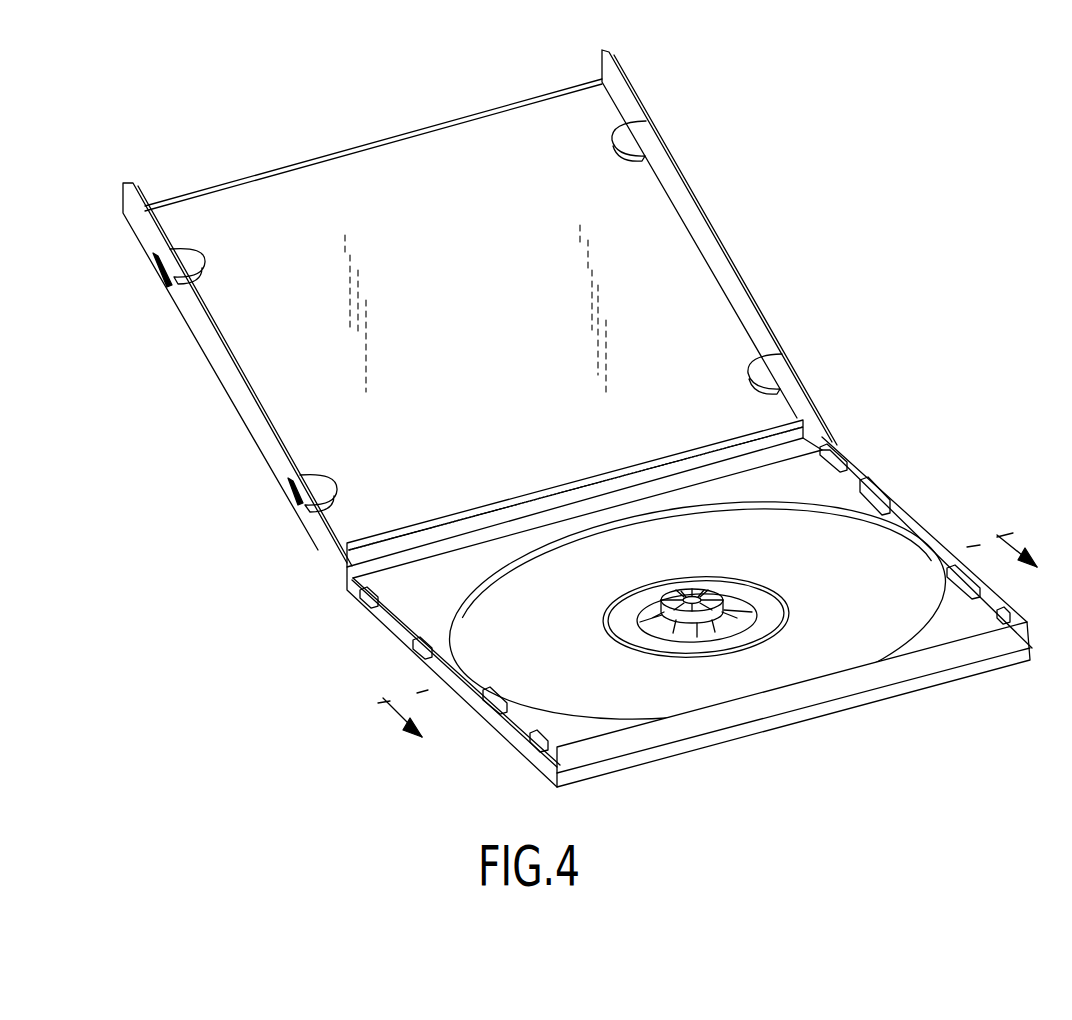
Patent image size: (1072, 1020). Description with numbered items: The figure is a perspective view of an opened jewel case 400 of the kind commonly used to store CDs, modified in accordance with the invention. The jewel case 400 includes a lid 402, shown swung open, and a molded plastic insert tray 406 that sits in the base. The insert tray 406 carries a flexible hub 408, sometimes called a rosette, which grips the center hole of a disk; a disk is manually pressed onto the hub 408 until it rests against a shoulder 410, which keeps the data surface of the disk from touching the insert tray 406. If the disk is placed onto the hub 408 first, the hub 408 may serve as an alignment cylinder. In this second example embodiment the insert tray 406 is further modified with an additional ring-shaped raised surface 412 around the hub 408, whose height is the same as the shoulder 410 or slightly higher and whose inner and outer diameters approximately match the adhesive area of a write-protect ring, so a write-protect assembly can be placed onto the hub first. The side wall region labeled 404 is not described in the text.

The jewel case 400 is at (588, 419).
The lid 402 is at (480, 308).
The lid side wall 404 is at (652, 230).
The insert tray 406 is at (893, 557).
The hub 408 is at (672, 602).
The shoulder 410 is at (733, 597).
The ring-shaped raised surface 412 is at (745, 647).